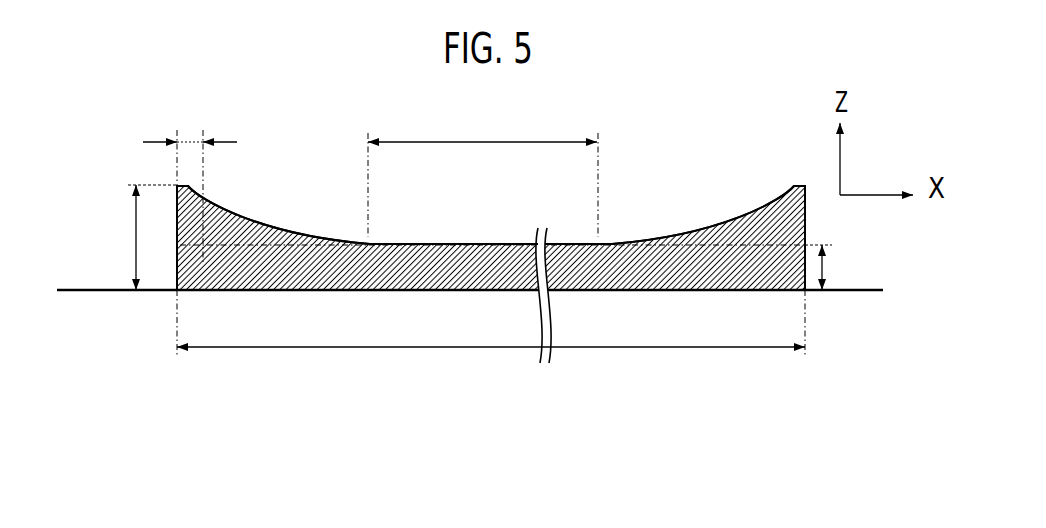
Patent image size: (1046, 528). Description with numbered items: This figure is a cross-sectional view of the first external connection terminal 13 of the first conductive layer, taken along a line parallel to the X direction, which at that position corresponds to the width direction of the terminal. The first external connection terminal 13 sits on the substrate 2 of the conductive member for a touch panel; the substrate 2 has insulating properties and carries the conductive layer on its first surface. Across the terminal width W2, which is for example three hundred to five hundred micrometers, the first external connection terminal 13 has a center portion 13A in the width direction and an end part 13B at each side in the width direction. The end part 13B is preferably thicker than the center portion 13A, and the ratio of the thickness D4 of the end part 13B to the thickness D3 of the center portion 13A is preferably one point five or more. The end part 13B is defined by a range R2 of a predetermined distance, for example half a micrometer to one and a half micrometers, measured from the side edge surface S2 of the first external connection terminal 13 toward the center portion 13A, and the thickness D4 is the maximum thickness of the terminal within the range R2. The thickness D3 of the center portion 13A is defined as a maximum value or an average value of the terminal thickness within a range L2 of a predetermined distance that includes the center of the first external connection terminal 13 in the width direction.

The substrate 2 is at (72, 303).
The first external connection terminal 13 is at (775, 268).
The center portion 13A is at (575, 215).
The end part 13B is at (257, 170).
The range R2 is at (190, 183).
The range L2 is at (483, 170).
The thickness of end part D4 is at (135, 237).
The thickness of center portion D3 is at (836, 267).
The side edge surface S2 is at (177, 250).
The terminal width W2 is at (491, 341).